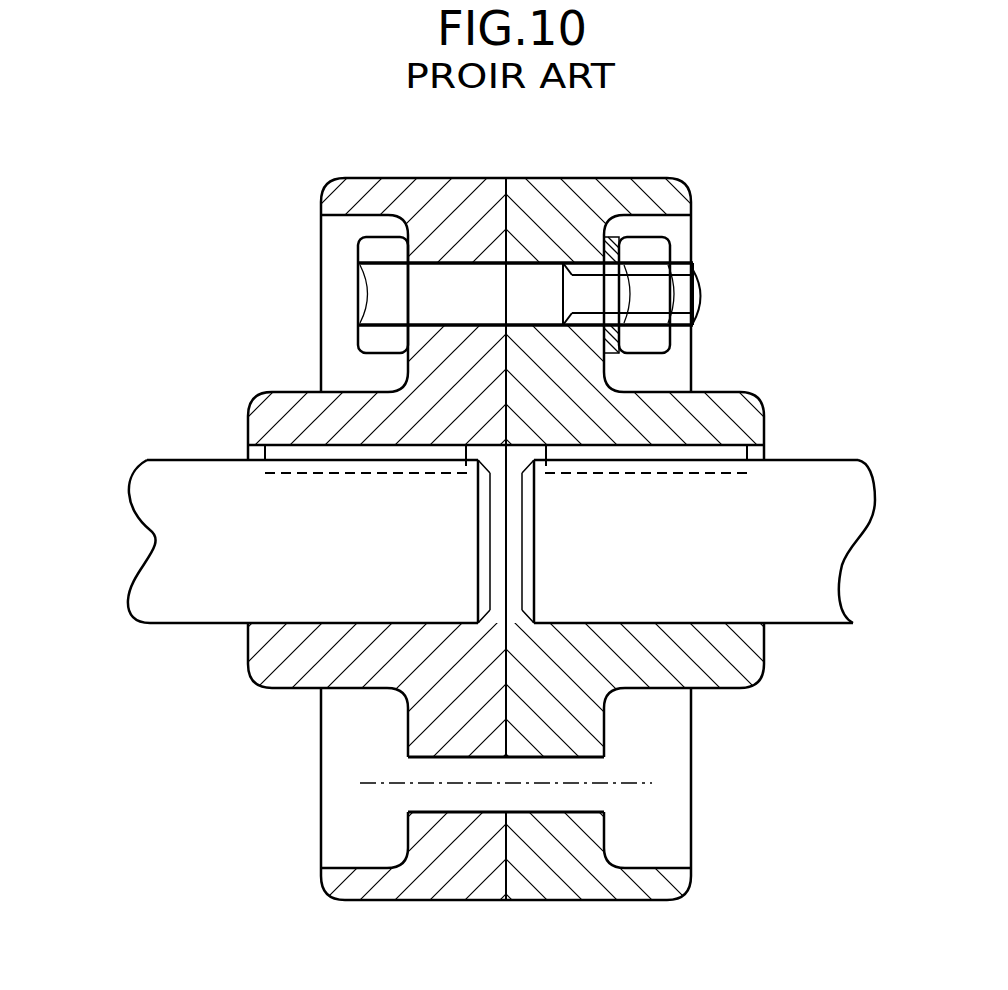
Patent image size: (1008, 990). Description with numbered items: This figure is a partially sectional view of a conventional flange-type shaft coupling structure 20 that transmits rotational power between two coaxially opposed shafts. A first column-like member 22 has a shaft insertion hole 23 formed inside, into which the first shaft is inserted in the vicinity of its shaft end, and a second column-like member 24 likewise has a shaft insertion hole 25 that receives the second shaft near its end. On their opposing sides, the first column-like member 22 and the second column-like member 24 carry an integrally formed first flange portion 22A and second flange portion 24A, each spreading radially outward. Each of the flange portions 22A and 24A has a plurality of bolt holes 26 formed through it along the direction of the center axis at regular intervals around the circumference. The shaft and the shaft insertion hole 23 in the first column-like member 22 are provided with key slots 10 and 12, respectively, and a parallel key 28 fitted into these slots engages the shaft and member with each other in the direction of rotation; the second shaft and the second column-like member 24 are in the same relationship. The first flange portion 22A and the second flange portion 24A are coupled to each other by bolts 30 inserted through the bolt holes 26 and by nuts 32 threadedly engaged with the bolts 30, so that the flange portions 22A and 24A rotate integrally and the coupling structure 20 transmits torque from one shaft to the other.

The key slot 10 is at (337, 447).
The key slot 12 is at (398, 478).
The shaft coupling structure 20 is at (752, 277).
The first column-like member 22 is at (742, 391).
The first flange portion 22A is at (585, 900).
The shaft insertion hole 23 is at (723, 625).
The second column-like member 24 is at (278, 400).
The second flange portion 24A is at (402, 900).
The shaft insertion hole 25 is at (278, 622).
The bolt hole 26 is at (563, 757).
The parallel key 28 is at (273, 453).
The bolt 30 is at (370, 255).
The nut 32 is at (665, 248).